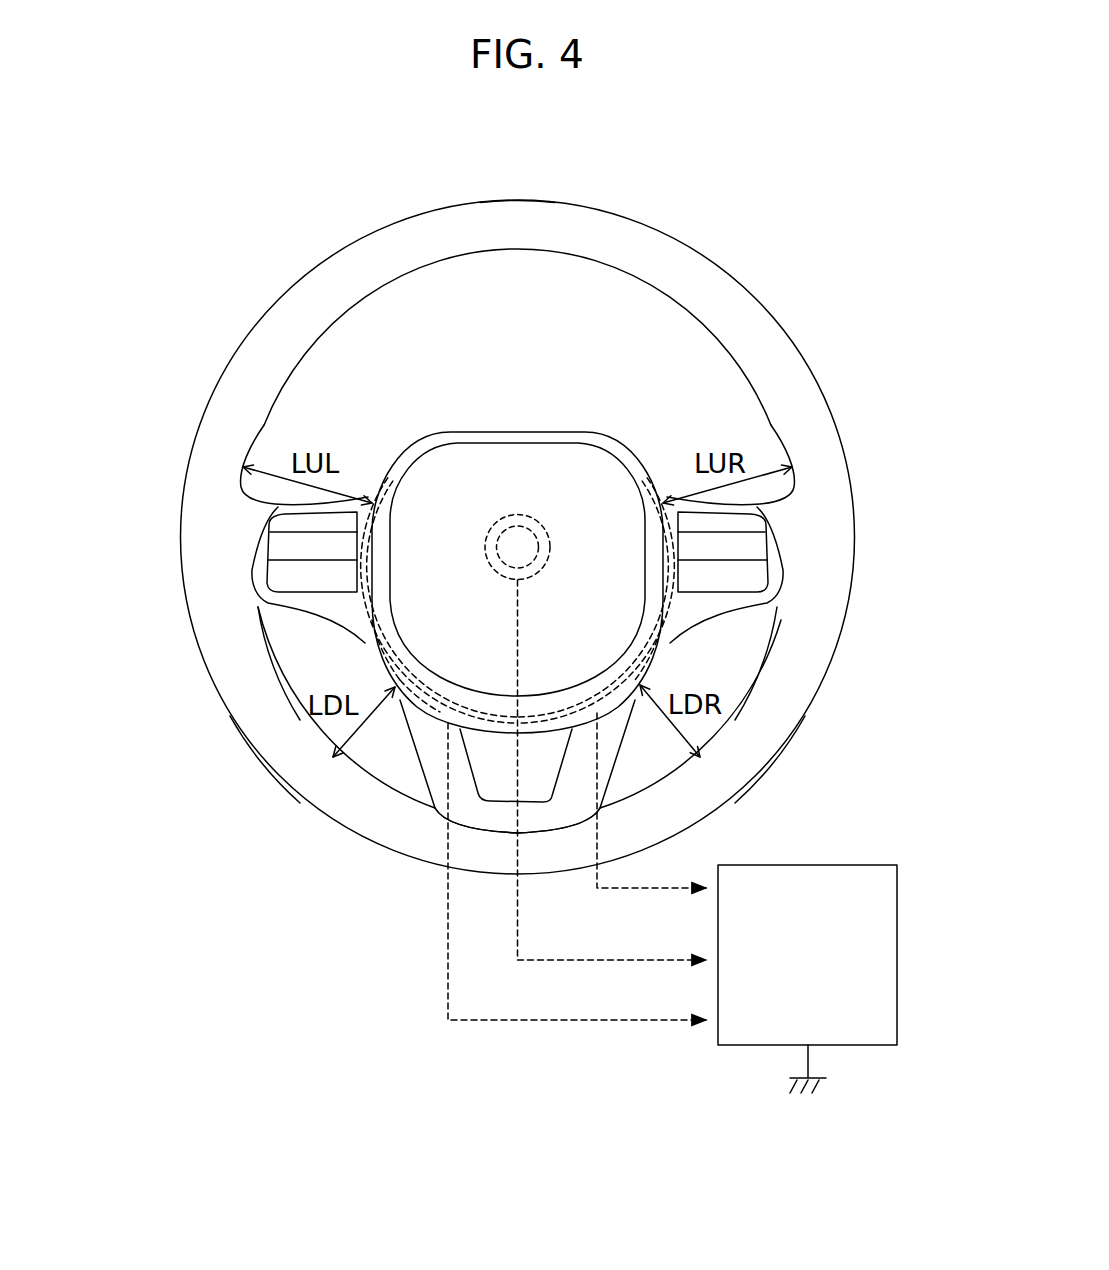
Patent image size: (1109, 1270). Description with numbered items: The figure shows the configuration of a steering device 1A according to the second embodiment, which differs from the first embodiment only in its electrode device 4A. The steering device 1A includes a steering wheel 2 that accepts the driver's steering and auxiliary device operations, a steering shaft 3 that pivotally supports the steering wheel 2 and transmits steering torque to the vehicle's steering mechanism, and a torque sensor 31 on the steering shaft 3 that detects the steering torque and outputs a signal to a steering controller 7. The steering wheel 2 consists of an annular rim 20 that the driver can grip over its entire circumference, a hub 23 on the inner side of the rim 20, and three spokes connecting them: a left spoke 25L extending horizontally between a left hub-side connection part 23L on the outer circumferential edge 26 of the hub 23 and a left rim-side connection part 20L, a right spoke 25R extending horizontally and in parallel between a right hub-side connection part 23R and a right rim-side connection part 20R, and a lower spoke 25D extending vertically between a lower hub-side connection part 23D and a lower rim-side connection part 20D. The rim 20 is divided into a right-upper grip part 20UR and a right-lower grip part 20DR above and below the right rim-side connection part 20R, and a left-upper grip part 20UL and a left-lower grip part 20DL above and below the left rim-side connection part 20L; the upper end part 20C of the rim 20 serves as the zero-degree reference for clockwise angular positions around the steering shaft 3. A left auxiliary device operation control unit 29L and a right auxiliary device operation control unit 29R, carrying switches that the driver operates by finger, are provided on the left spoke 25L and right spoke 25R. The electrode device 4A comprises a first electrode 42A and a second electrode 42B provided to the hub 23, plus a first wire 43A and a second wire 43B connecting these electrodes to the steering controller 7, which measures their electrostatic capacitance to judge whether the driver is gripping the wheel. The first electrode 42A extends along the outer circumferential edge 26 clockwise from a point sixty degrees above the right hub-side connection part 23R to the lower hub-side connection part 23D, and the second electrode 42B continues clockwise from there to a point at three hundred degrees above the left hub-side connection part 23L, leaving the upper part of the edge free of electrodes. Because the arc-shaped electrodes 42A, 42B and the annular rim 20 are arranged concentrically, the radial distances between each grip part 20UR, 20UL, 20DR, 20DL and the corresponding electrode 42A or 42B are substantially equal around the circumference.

The steering device 1A is at (913, 192).
The steering wheel 2 is at (752, 234).
The steering shaft 3 is at (520, 526).
The torque sensor 31 is at (503, 516).
The electrode device 4A is at (374, 452).
The steering controller 7 is at (897, 927).
The rim 20 is at (650, 240).
The upper end part 20C is at (517, 204).
The left-upper grip part 20UL is at (218, 430).
The right-upper grip part 20UR is at (825, 422).
The left rim-side connection part 20L is at (247, 518).
The right rim-side connection part 20R is at (788, 518).
The left-lower grip part 20DL is at (215, 667).
The right-lower grip part 20DR is at (815, 683).
The lower rim-side connection part 20D is at (488, 837).
The hub 23 is at (586, 436).
The left hub-side connection part 23L is at (368, 570).
The right hub-side connection part 23R is at (667, 570).
The lower hub-side connection part 23D is at (553, 715).
The left spoke 25L is at (329, 607).
The right spoke 25R is at (736, 607).
The lower spoke 25D is at (607, 743).
The outer circumferential edge 26 is at (377, 665).
The left auxiliary device operation control unit 29L is at (273, 550).
The right auxiliary device operation control unit 29R is at (762, 550).
The first electrode 42A is at (657, 667).
The second electrode 42B is at (420, 703).
The first wire 43A is at (448, 945).
The second wire 43B is at (657, 888).